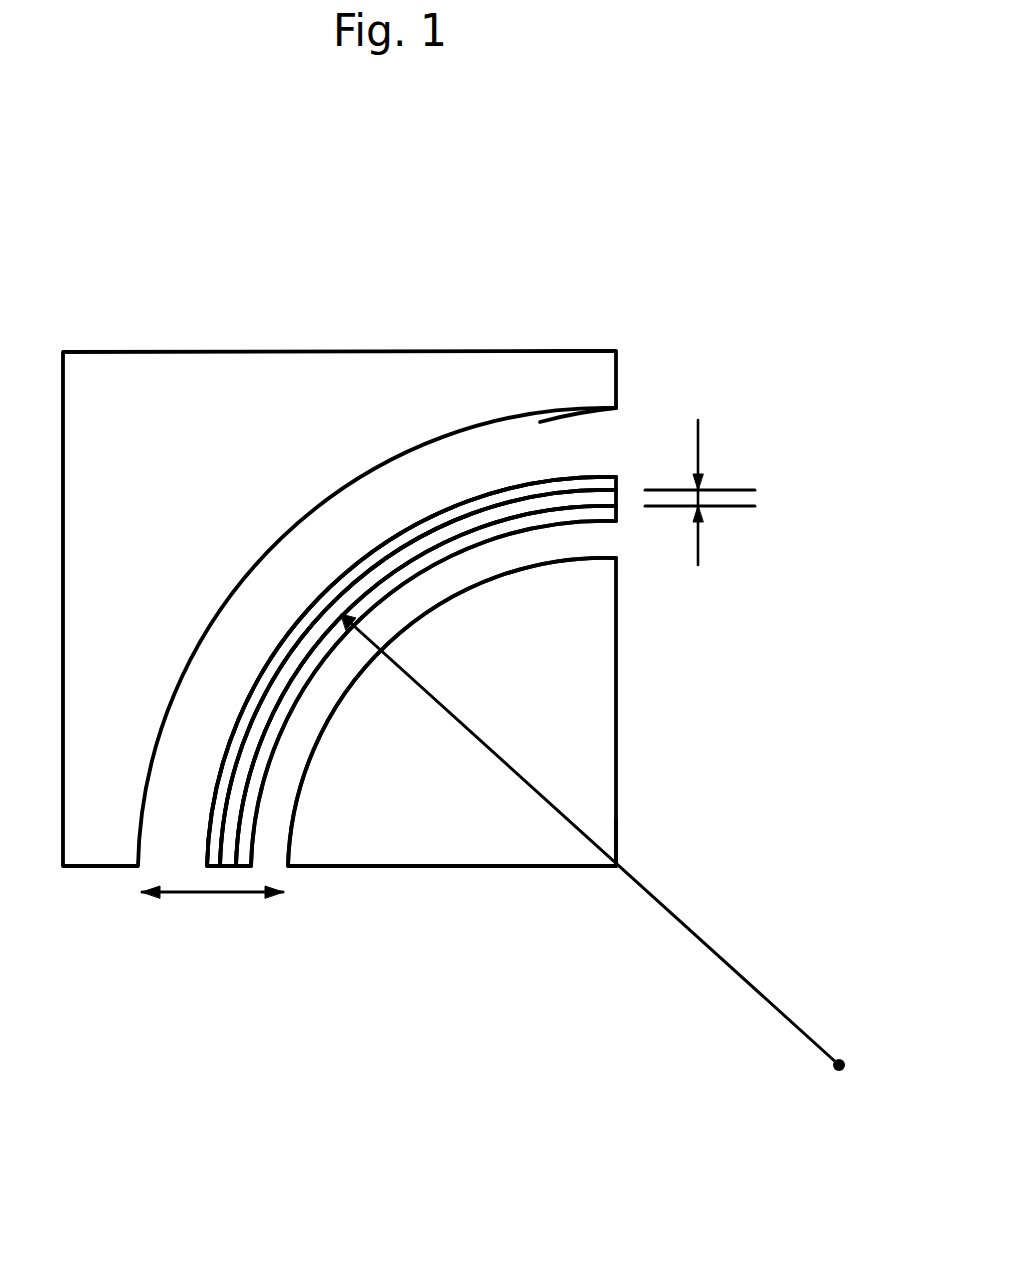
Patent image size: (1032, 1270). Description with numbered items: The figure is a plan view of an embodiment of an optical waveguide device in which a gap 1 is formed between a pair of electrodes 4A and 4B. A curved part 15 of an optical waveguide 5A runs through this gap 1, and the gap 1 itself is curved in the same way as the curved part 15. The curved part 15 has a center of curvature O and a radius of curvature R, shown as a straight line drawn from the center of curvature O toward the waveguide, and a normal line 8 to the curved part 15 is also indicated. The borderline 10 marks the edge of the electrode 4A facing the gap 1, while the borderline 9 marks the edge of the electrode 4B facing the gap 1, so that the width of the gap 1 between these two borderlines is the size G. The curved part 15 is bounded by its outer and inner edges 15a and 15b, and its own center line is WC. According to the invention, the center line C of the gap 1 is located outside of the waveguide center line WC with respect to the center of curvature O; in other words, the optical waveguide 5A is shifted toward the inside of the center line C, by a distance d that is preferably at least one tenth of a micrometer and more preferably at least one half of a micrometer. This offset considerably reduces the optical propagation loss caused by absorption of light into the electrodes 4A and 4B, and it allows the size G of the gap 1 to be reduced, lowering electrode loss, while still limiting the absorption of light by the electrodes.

The gap 1 is at (565, 409).
The electrode 4A is at (603, 378).
The electrode 4B is at (609, 606).
The optical waveguide 5A is at (293, 627).
The normal line 8 is at (640, 883).
The borderline of electrode 4B 9 is at (339, 701).
The borderline of electrode 4A 10 is at (218, 612).
The curved part 15 is at (430, 518).
The outer edge of curved part 15a is at (362, 555).
The inner edge of curved part 15b is at (403, 590).
The center line of the gap C is at (486, 512).
The center line of the curved part WC is at (497, 527).
The distance d is at (700, 492).
The size of the gap G is at (220, 894).
The radius of curvature R is at (590, 839).
The center of curvature O is at (833, 1073).